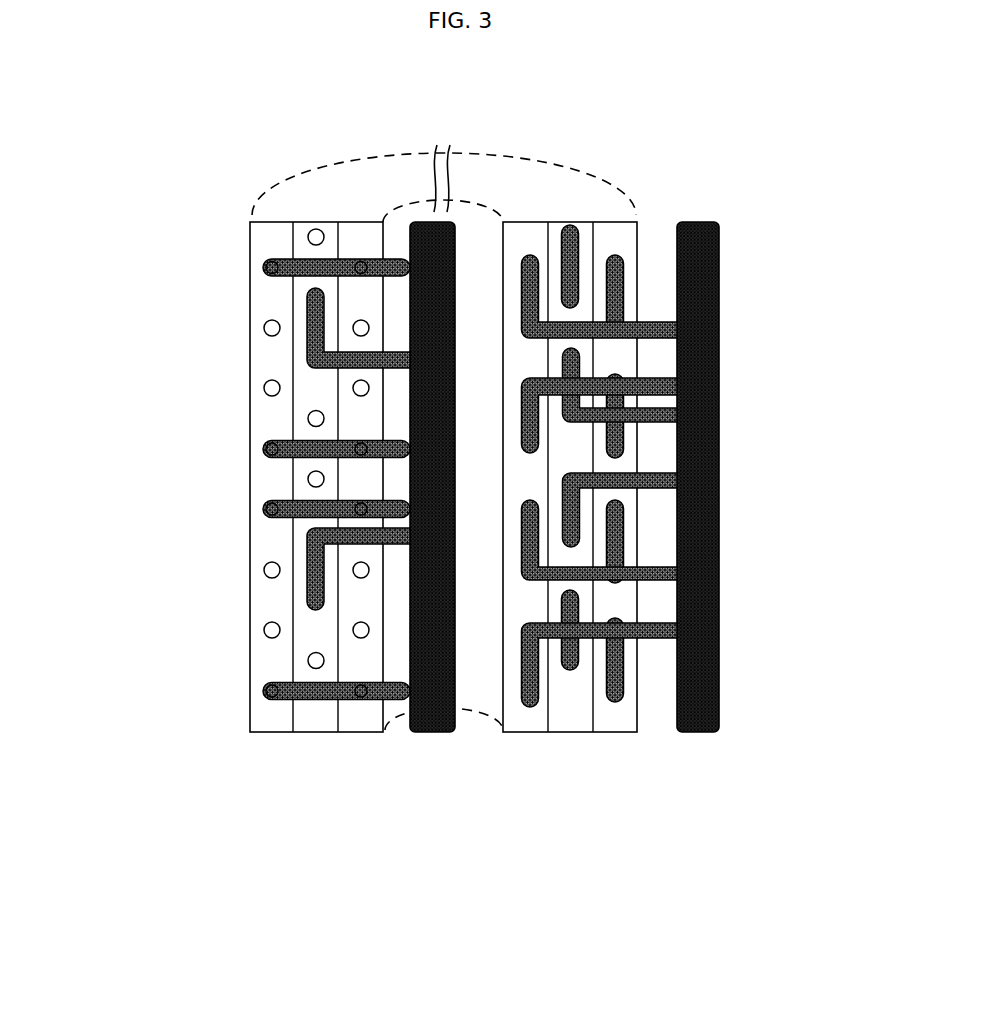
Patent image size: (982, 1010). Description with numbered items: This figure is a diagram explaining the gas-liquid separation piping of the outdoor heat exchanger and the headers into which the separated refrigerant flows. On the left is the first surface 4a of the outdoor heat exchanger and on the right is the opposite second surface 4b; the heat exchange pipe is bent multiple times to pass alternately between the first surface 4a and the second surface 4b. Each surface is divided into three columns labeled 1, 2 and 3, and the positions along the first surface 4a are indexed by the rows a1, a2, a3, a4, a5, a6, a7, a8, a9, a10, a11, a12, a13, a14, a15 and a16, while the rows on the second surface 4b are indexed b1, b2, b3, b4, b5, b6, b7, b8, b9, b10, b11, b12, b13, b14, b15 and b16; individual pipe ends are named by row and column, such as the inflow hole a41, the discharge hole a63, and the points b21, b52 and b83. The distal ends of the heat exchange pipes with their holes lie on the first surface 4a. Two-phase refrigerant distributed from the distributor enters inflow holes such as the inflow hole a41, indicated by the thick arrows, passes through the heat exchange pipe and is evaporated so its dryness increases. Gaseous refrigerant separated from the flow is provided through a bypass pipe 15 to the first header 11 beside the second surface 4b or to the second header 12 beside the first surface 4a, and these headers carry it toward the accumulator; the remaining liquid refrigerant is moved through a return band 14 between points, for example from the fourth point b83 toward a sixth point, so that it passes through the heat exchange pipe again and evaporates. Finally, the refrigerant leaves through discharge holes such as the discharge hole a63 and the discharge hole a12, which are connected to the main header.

The first connection column 1 is at (615, 255).
The second connection column 2 is at (570, 225).
The third connection column 3 is at (530, 255).
The first surface 4a is at (272, 722).
The second surface 4b is at (618, 723).
The first header 11 is at (700, 725).
The second header 12 is at (433, 723).
The return band 14 is at (266, 266).
The bypass pipe 15 is at (398, 262).
The first-side connection point a1 is at (308, 237).
The first-side connection point a2 is at (262, 267).
The first-side connection point a3 is at (306, 297).
The first-side connection point a4 is at (180, 328).
The first-side connection point a5 is at (300, 358).
The first-side connection point a6 is at (180, 388).
The first-side connection point a7 is at (223, 418).
The first-side connection point a8 is at (262, 449).
The first-side connection point a9 is at (188, 479).
The first-side connection point a10 is at (262, 509).
The first-side connection point a11 is at (305, 539).
The discharge hole a12 is at (308, 238).
The first-side connection point a13 is at (300, 600).
The first-side connection point a14 is at (180, 630).
The first-side connection point a15 is at (223, 660).
The first-side connection point a16 is at (262, 691).
The inflow hole a41 is at (280, 326).
The discharge hole a63 is at (455, 393).
The second-side connection point b1 is at (580, 237).
The second-side connection point b2 is at (540, 266).
The second-side connection point b3 is at (540, 296).
The second-side connection point b4 is at (720, 323).
The second-side connection point b5 is at (580, 357).
The second-side connection point b6 is at (720, 378).
The second-side connection point b7 is at (720, 408).
The second-side connection point b8 is at (540, 450).
The second-side connection point b9 is at (720, 487).
The second-side connection point b10 is at (540, 510).
The second-side connection point b11 is at (580, 538).
The second-side connection point b12 is at (720, 570).
The second-side connection point b13 is at (580, 600).
The second-side connection point b14 is at (720, 637).
The second-side connection point b15 is at (580, 662).
The second-side connection point b16 is at (540, 693).
The slot at row b2 column 1 b21 is at (616, 258).
The slot at row b5 column 2 b52 is at (565, 361).
The fourth point b83 is at (523, 459).